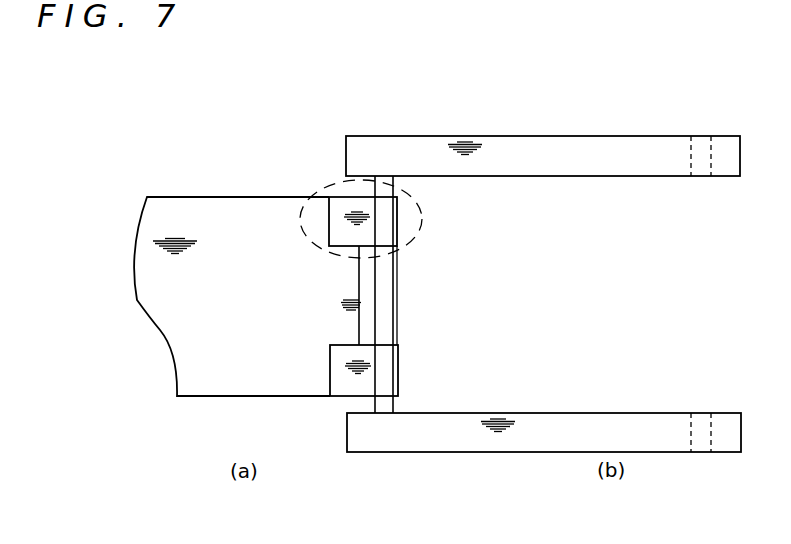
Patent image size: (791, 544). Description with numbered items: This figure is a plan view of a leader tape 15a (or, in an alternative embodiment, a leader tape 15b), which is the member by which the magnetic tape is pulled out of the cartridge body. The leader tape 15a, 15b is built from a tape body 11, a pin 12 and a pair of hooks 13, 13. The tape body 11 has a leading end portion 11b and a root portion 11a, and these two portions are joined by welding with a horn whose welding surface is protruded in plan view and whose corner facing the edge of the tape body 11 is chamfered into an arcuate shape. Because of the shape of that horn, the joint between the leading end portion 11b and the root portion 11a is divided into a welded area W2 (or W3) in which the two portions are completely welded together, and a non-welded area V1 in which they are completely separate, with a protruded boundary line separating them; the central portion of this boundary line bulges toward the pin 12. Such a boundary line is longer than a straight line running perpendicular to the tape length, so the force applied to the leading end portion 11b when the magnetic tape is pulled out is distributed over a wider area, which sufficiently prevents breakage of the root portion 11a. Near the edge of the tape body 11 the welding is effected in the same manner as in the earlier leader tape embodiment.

The leader tape 15a is at (325, 87).
The leader tape 15b is at (390, 87).
The tape body 11 is at (203, 387).
The root portion 11a is at (347, 340).
The leading end portion 11b is at (343, 212).
The pin 12 is at (394, 408).
The hooks 13 is at (598, 170).
The non-welded area V1 is at (375, 292).
The welded area W2 is at (313, 252).
The welded area W3 is at (352, 227).